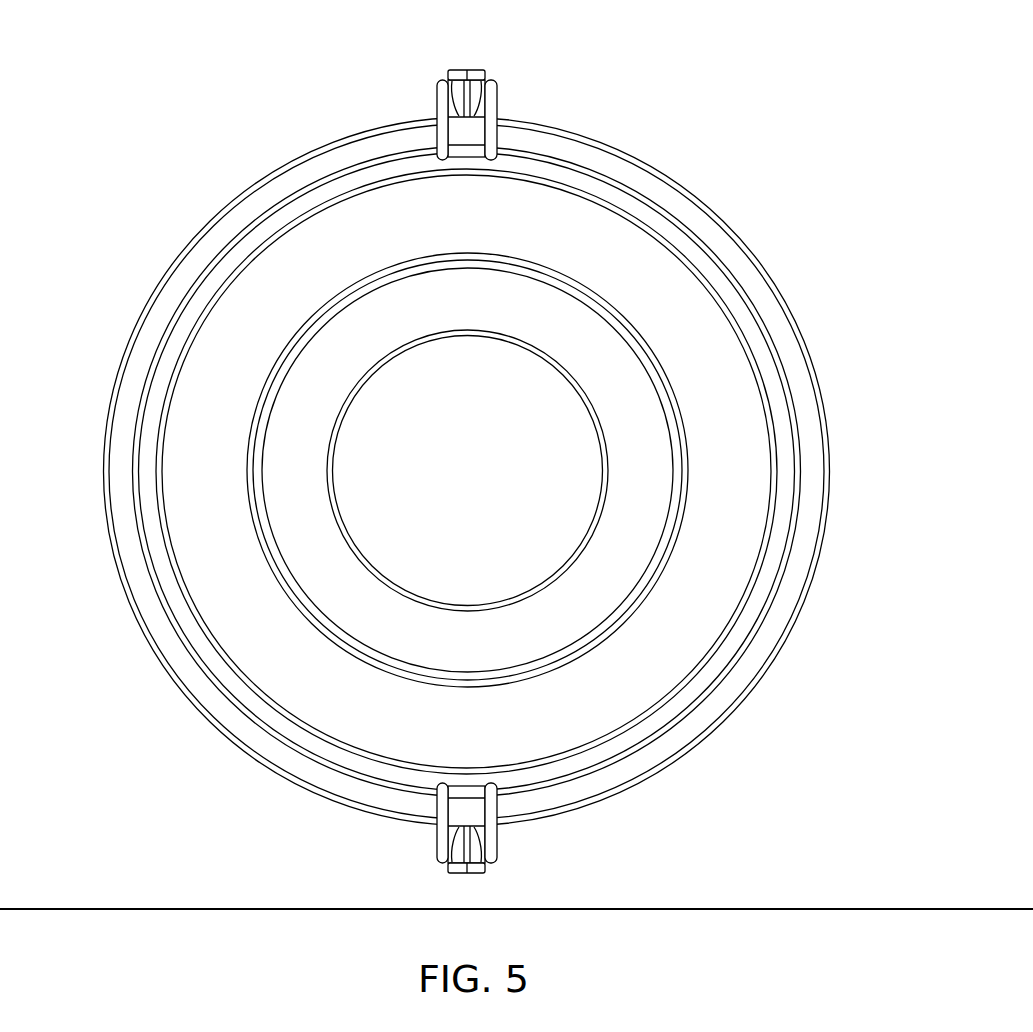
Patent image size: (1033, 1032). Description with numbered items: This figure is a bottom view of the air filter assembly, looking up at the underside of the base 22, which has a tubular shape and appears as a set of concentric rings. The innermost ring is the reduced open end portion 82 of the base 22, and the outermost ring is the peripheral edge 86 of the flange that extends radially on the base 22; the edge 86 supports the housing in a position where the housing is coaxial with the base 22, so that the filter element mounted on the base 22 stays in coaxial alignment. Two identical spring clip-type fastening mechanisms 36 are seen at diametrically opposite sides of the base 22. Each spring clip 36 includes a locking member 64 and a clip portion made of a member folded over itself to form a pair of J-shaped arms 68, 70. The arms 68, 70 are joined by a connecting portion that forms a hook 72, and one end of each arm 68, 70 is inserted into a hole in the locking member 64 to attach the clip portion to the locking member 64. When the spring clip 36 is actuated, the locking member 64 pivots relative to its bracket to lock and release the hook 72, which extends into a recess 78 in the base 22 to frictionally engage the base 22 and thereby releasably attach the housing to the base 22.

The base 22 is at (180, 223).
The spring clip-type fastening mechanism 36 is at (473, 475).
The locking member 64 is at (479, 68).
The J-shaped arm 68 is at (494, 100).
The J-shaped arm 70 is at (446, 86).
The hook 72 is at (472, 151).
The recess 78 is at (401, 162).
The reduced open end portion 82 is at (602, 428).
The peripheral edge 86 is at (142, 312).